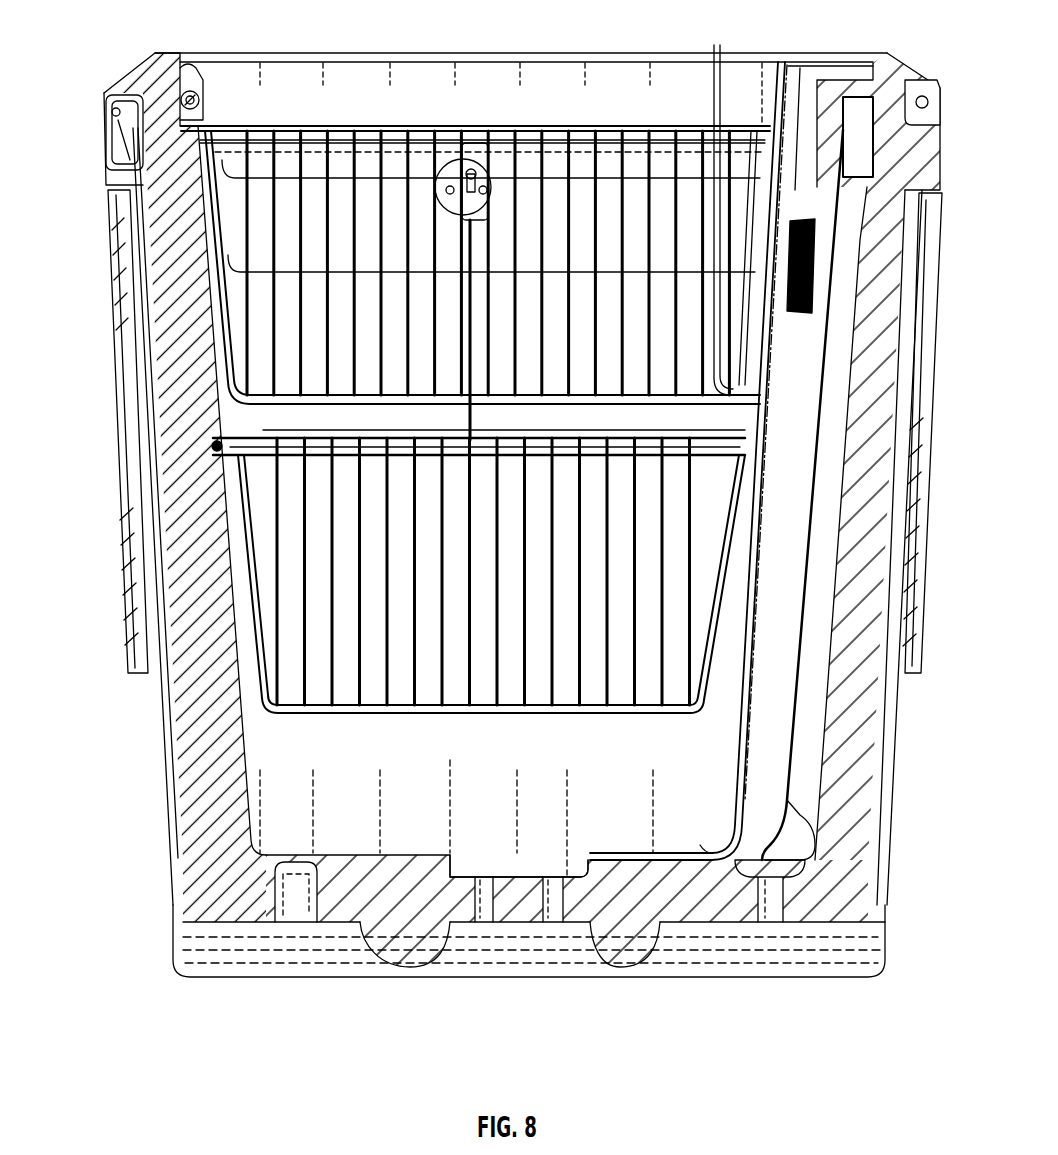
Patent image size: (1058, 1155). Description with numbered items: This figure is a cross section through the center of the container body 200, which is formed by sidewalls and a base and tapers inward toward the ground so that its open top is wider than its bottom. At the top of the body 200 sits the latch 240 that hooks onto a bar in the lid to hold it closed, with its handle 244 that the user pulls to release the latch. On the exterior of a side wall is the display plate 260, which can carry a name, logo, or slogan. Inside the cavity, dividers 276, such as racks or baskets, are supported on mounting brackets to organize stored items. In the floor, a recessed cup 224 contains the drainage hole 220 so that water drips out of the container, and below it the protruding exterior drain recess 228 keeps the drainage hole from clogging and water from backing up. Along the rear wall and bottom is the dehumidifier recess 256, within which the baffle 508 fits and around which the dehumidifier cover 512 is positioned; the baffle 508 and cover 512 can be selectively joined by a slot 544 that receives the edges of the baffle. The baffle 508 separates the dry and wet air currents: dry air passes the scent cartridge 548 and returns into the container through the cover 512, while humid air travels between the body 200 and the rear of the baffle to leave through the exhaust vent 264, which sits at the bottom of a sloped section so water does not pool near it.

The body 200 is at (488, 70).
The drainage hole 220 is at (557, 889).
The recessed cup 224 is at (510, 860).
The exterior drain recess 228 is at (563, 958).
The latch 240 is at (194, 76).
The handle 244 is at (108, 128).
The dehumidifier recess 256 is at (808, 743).
The display plate 260 is at (125, 494).
The exhaust vent 264 is at (771, 924).
The dividers 276 is at (717, 45).
The baffle 508 is at (799, 822).
The dehumidifier cover 512 is at (731, 758).
The slot 544 is at (702, 856).
The scent cartridge 548 is at (797, 314).